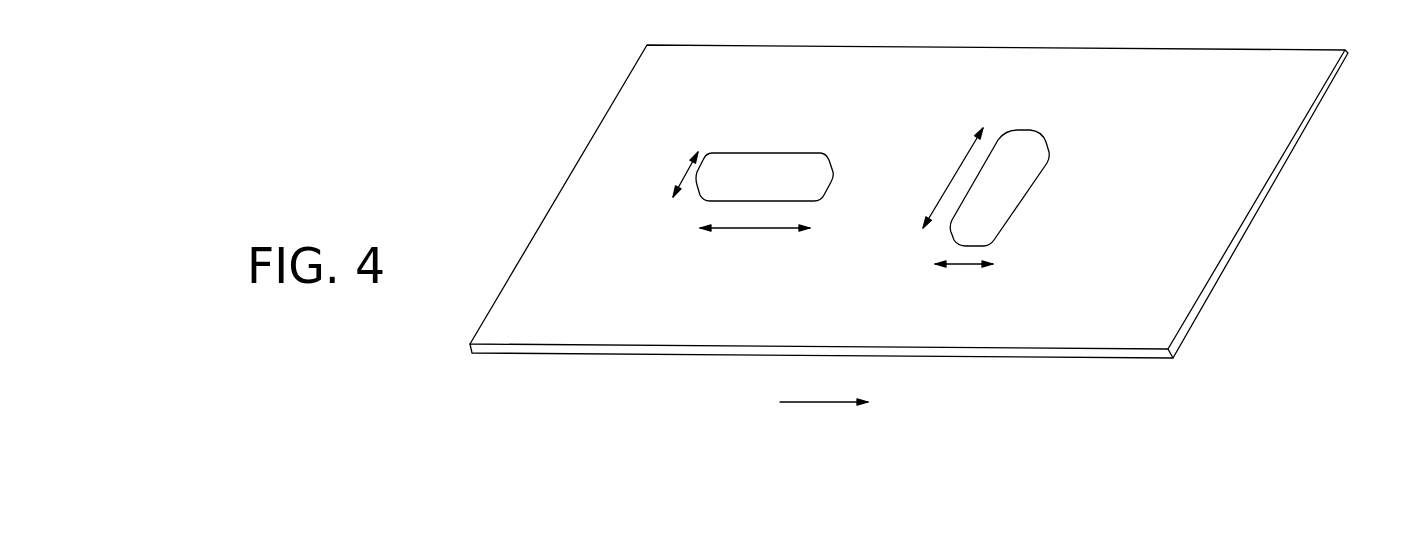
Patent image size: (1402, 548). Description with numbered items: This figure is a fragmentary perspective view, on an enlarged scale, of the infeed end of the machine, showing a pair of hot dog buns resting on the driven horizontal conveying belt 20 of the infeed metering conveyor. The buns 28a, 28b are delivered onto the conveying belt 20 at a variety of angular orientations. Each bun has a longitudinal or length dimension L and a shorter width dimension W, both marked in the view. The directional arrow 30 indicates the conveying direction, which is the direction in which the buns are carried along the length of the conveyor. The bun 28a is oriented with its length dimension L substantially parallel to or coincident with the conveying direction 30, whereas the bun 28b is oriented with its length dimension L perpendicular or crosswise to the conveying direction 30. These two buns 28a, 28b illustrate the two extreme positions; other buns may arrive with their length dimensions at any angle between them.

The conveying belt 20 is at (1167, 313).
The hot dog bun 28a is at (767, 170).
The hot dog bun 28b is at (1025, 163).
The directional arrow 30 is at (817, 403).